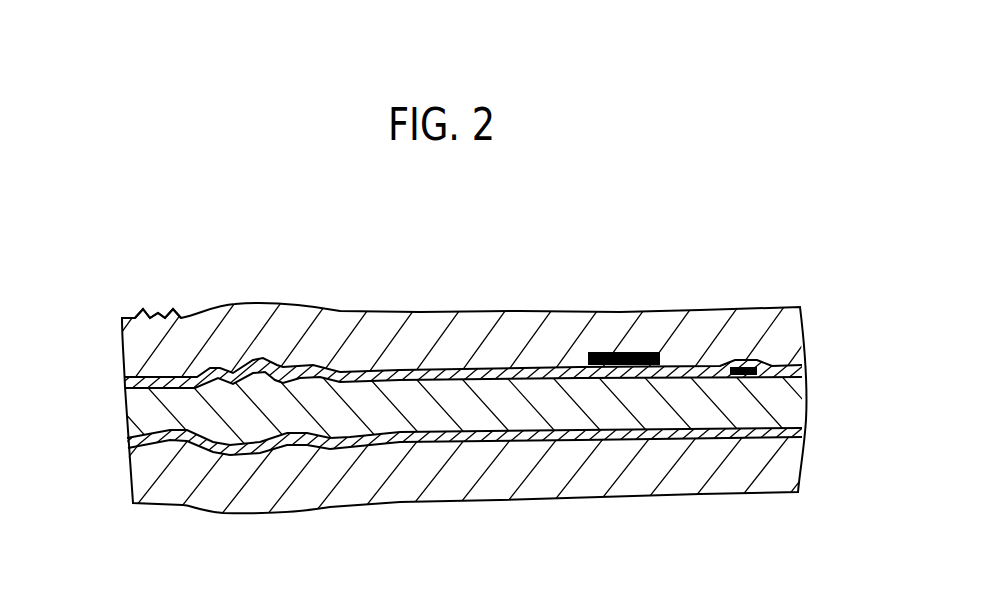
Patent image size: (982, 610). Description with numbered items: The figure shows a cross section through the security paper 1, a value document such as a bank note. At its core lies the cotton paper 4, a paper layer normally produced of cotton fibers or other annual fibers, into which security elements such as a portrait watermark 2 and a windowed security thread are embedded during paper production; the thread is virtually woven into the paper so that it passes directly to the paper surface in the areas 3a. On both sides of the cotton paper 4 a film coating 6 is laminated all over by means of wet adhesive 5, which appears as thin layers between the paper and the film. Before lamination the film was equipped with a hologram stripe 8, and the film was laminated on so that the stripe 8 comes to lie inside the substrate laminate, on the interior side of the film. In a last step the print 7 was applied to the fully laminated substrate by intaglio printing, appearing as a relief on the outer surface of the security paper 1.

The security paper 1 is at (777, 268).
The portrait watermark 2 is at (228, 430).
The areas where security thread passes to the surface 3a is at (742, 364).
The cotton paper 4 is at (142, 412).
The wet adhesive 5 is at (800, 432).
The film coating 6 is at (793, 330).
The print 7 is at (163, 310).
The hologram stripe 8 is at (604, 352).